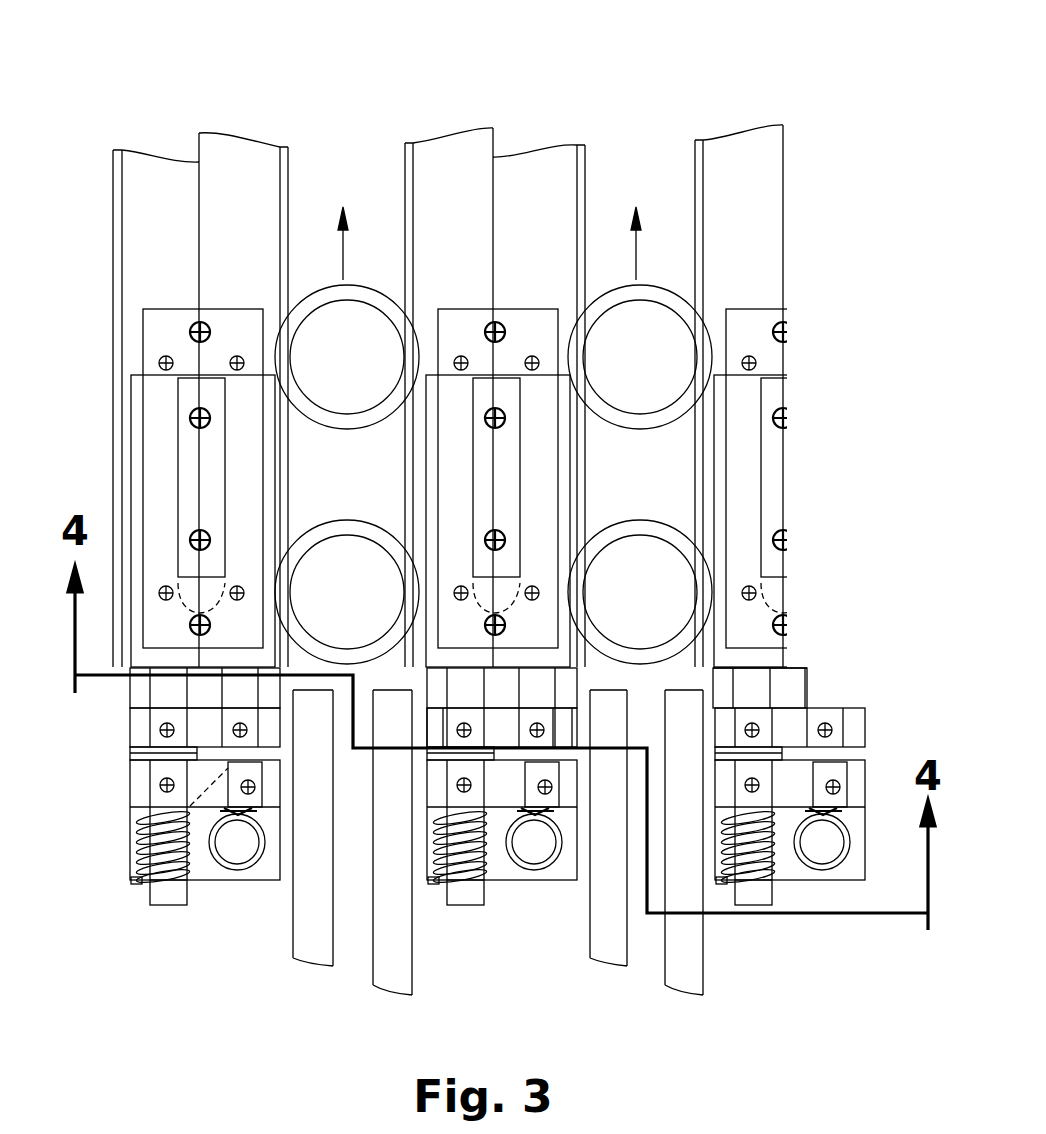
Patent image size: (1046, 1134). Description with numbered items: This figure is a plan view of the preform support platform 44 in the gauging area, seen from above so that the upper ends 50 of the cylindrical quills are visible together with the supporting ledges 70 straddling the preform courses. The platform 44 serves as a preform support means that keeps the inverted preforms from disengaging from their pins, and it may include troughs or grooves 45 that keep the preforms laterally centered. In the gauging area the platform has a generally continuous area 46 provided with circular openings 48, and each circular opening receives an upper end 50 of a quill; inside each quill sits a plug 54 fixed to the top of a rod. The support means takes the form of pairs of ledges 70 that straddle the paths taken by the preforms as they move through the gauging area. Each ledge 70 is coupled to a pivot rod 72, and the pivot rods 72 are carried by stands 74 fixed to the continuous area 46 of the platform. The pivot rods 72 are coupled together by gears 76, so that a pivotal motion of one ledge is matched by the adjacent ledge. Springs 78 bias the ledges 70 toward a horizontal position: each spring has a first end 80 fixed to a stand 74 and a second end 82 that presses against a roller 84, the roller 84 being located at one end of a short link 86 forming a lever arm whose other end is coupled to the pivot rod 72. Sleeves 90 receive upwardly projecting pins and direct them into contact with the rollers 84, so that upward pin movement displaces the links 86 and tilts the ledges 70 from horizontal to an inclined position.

The platform 44 is at (505, 80).
The troughs or grooves 45 is at (380, 945).
The generally continuous area 46 is at (332, 485).
The circular openings 48 is at (682, 424).
The upper ends of quills 50 is at (657, 527).
The plug 54 is at (332, 372).
The ledges 70 is at (284, 148).
The pivot rods 72 is at (158, 695).
The stands 74 is at (273, 703).
The gears 76 is at (433, 726).
The springs 78 is at (440, 840).
The first end of spring 80 is at (437, 883).
The second end of spring 82 is at (522, 808).
The roller 84 is at (252, 837).
The short link 86 is at (547, 767).
The sleeves 90 is at (257, 868).